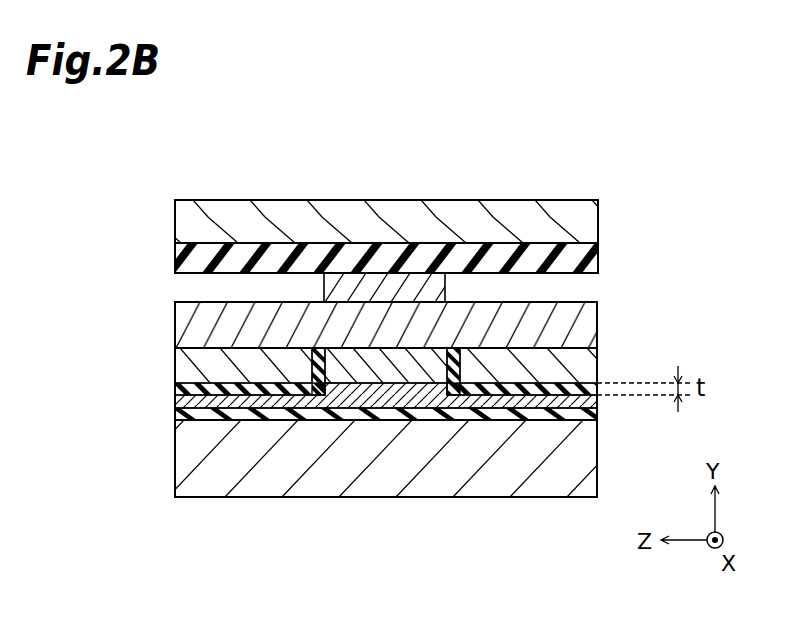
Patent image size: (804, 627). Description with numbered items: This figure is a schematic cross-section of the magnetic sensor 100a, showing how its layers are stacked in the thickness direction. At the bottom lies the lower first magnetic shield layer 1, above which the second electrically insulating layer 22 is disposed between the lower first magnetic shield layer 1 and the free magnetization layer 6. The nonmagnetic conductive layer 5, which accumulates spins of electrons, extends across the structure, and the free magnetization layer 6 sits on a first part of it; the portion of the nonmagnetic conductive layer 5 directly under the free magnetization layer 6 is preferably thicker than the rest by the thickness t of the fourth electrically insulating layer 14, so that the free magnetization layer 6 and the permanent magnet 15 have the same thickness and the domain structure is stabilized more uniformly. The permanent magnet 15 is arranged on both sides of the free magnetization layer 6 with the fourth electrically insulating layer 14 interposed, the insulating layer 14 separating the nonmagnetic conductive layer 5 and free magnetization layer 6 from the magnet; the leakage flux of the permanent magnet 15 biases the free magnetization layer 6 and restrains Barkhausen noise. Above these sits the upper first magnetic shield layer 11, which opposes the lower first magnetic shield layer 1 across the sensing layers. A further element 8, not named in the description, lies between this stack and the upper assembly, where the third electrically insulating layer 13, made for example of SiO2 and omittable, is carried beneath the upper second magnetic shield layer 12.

The magnetic sensor 100a is at (516, 141).
The lower first magnetic shield layer 1 is at (590, 446).
The nonmagnetic conductive layer 5 is at (590, 401).
The free magnetization layer 6 is at (382, 373).
The spacer 8 is at (446, 288).
The upper first magnetic shield layer 11 is at (590, 328).
The upper second magnetic shield layer 12 is at (592, 219).
The third electrically insulating layer 13 is at (592, 257).
The fourth electrically insulating layer 14 is at (560, 386).
The permanent magnet 15 is at (590, 358).
The second electrically insulating layer 22 is at (200, 415).